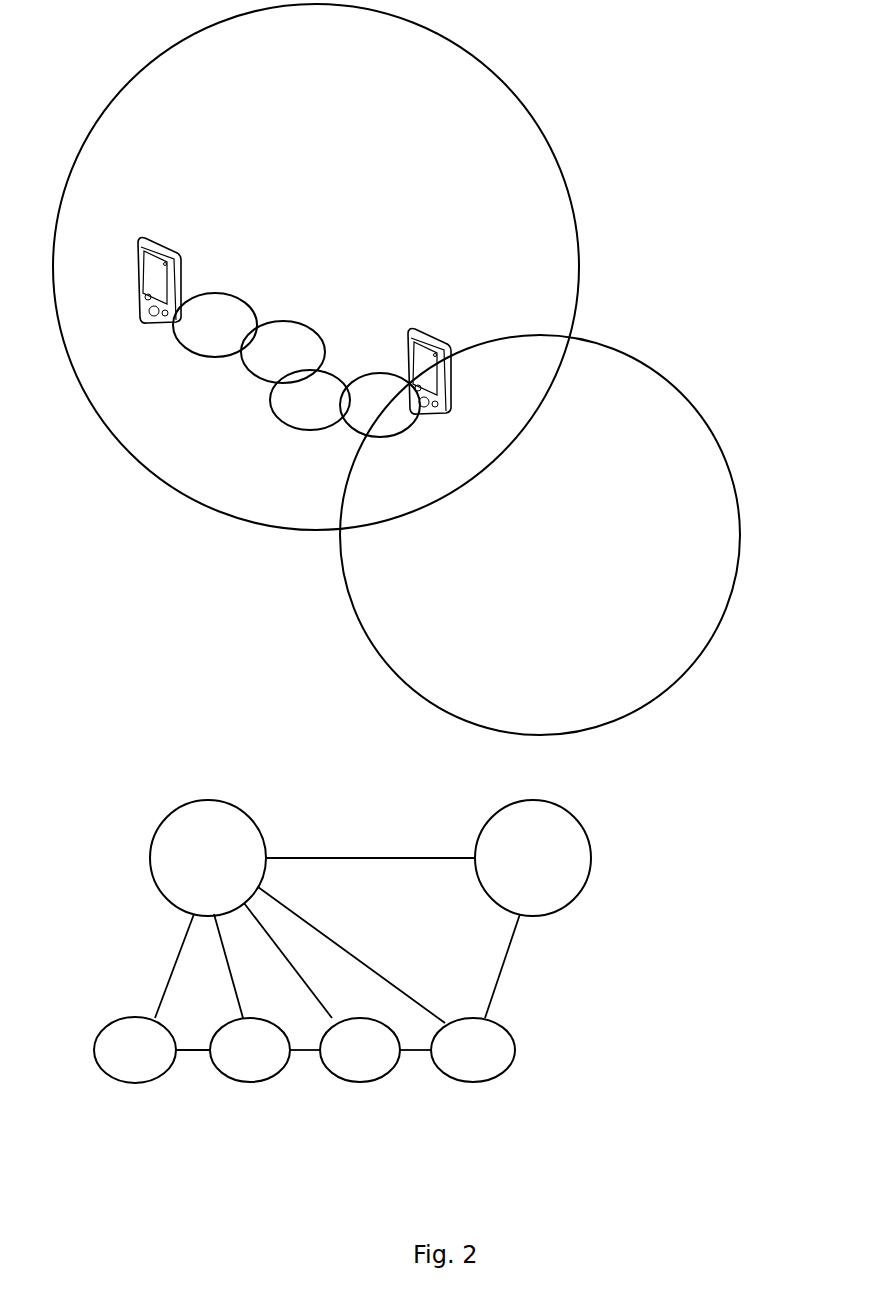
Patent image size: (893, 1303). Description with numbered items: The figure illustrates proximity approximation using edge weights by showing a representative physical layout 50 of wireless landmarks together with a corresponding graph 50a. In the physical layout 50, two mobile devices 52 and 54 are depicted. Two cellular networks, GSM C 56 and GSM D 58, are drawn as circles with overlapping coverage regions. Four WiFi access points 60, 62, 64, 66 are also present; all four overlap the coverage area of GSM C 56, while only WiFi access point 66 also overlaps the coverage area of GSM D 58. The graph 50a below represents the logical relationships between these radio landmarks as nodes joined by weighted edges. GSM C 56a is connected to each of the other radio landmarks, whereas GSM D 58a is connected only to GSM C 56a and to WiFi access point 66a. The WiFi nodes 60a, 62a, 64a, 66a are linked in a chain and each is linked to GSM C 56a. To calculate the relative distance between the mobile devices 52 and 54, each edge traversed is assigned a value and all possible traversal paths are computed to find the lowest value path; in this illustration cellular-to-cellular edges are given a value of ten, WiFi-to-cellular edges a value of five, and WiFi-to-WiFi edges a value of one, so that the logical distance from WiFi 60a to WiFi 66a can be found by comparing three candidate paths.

The physical layout 50 is at (700, 164).
The mobile device 52 is at (134, 262).
The mobile device 54 is at (406, 350).
The GSM C cellular network 56 is at (562, 170).
The GSM D cellular network 58 is at (692, 400).
The WiFi access point 60 is at (192, 355).
The WiFi access point 62 is at (255, 380).
The WiFi access point 64 is at (320, 432).
The WiFi access point 66 is at (378, 438).
The graph 50a is at (693, 846).
The GSM C node 56a is at (208, 799).
The GSM D node 58a is at (532, 800).
The WiFi node 60a is at (133, 1084).
The WiFi node 62a is at (250, 1084).
The WiFi node 64a is at (360, 1084).
The WiFi node 66a is at (470, 1084).